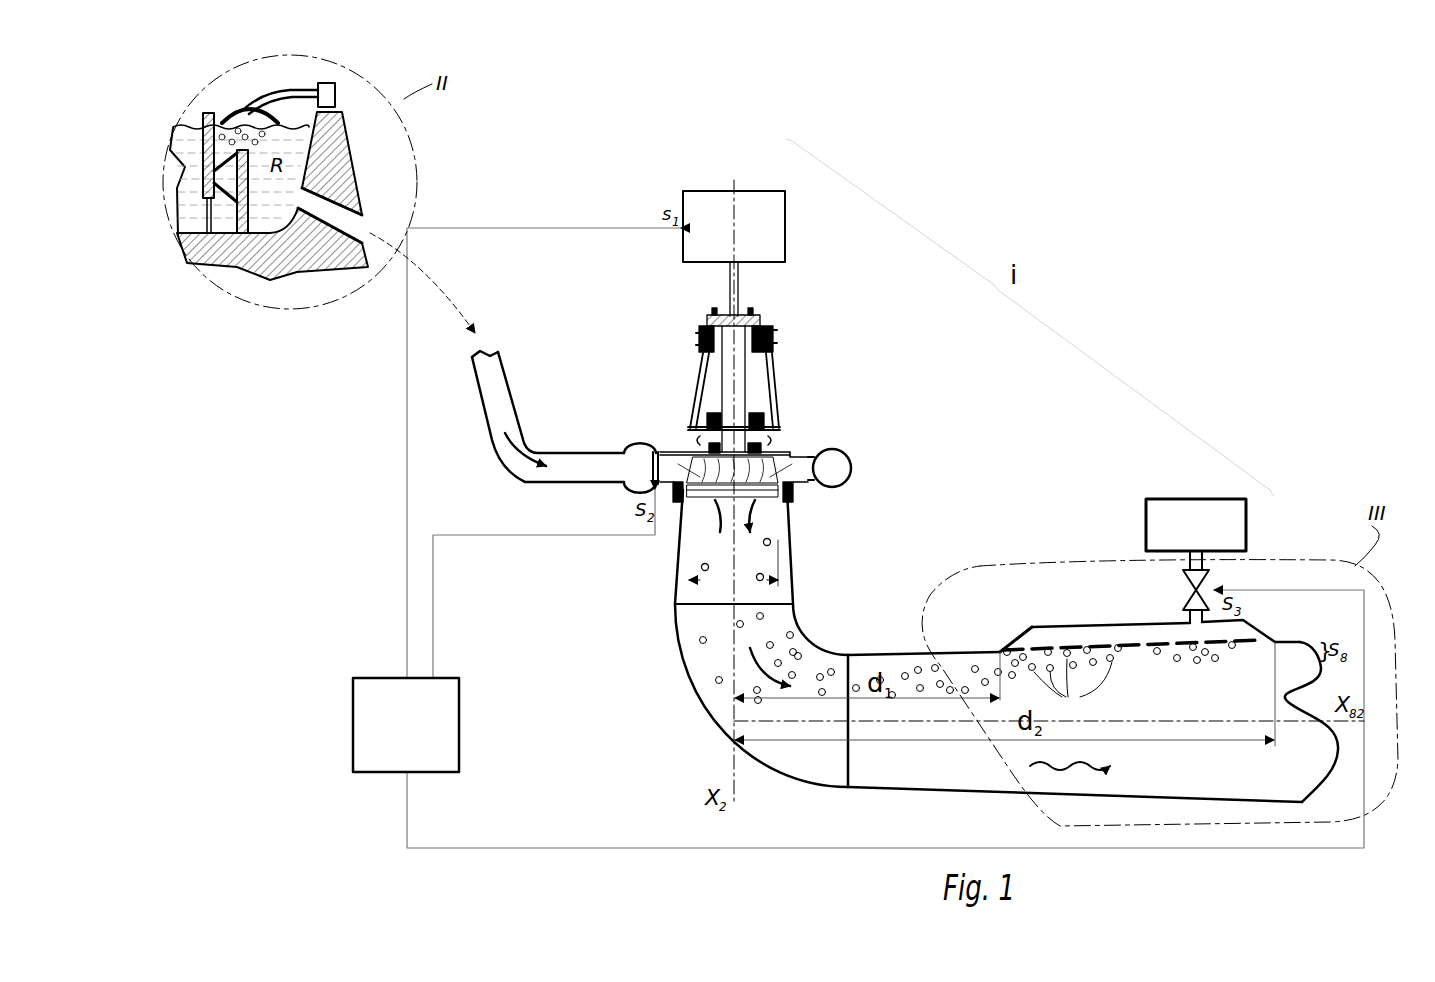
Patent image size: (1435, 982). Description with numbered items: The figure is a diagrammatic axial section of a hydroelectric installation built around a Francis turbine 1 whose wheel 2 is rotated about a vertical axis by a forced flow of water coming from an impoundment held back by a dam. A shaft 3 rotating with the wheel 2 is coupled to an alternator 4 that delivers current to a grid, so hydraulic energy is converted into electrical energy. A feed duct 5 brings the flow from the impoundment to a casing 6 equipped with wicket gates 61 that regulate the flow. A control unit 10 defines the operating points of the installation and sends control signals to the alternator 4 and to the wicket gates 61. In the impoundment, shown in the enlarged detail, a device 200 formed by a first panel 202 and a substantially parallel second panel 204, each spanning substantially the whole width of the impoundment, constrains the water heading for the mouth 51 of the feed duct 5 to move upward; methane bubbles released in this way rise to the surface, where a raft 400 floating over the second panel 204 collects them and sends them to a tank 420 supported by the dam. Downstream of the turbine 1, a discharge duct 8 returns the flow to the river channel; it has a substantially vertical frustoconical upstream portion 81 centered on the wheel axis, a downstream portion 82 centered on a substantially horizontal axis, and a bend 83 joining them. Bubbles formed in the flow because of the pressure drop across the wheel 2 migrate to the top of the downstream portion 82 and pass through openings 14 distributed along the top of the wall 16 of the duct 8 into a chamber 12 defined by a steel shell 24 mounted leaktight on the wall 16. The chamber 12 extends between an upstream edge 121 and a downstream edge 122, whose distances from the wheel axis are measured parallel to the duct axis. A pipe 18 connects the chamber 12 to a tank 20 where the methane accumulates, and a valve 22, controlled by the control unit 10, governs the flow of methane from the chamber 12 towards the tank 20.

The Francis turbine 1 is at (783, 416).
The wheel 2 is at (795, 500).
The shaft 3 is at (742, 372).
The alternator 4 is at (734, 253).
The feed duct 5 is at (498, 388).
The casing 6 is at (852, 468).
The wicket gates 61 is at (657, 450).
The discharge duct 8 is at (838, 638).
The upstream portion 81 is at (783, 558).
The downstream portion 82 is at (860, 665).
The bend 83 is at (790, 642).
The control unit 10 is at (406, 725).
The chamber 12 is at (1040, 628).
The upstream edge 121 is at (1000, 650).
The downstream edge 122 is at (1278, 642).
The openings 14 is at (1226, 648).
The wall 16 is at (985, 798).
The pipe 18 is at (1150, 622).
The tank 20 is at (1196, 525).
The valve 22 is at (1180, 582).
The shell 24 is at (1245, 620).
The mouth 51 is at (292, 199).
The device 200 is at (193, 243).
The first panel 202 is at (213, 170).
The second panel 204 is at (250, 210).
The raft 400 is at (238, 100).
The tank 420 is at (336, 100).